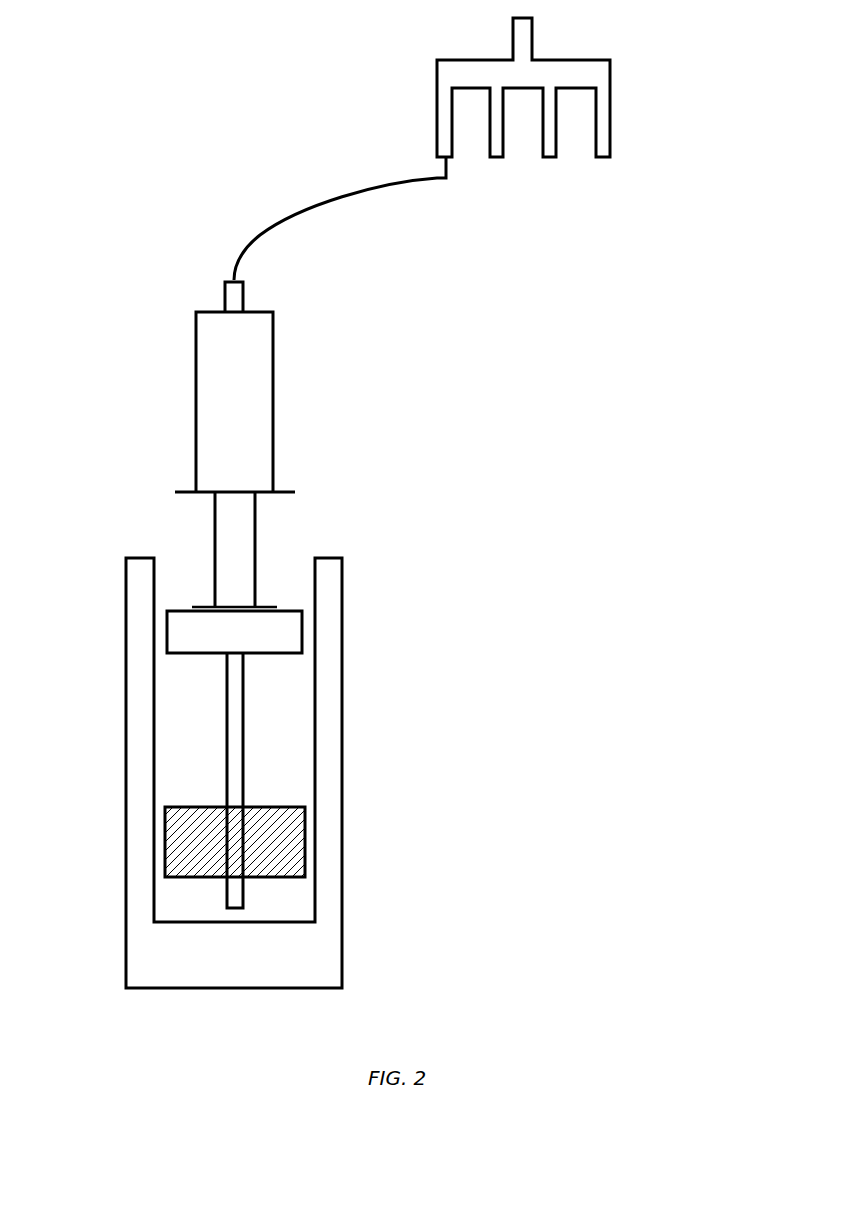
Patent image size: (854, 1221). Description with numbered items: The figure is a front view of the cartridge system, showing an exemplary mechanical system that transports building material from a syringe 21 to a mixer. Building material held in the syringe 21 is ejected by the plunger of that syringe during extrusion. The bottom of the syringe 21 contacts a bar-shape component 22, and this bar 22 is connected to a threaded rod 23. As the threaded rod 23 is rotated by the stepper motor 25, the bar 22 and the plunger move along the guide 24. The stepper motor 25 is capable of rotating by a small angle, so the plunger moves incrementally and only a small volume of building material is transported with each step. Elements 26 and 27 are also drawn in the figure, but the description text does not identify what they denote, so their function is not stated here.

The syringe 21 is at (195, 403).
The bar-shape component 22 is at (283, 632).
The threaded rod 23 is at (245, 733).
The guide 24 is at (140, 988).
The stepper motor 25 is at (285, 840).
The connector 26 is at (610, 92).
The cable / tubing 27 is at (327, 197).